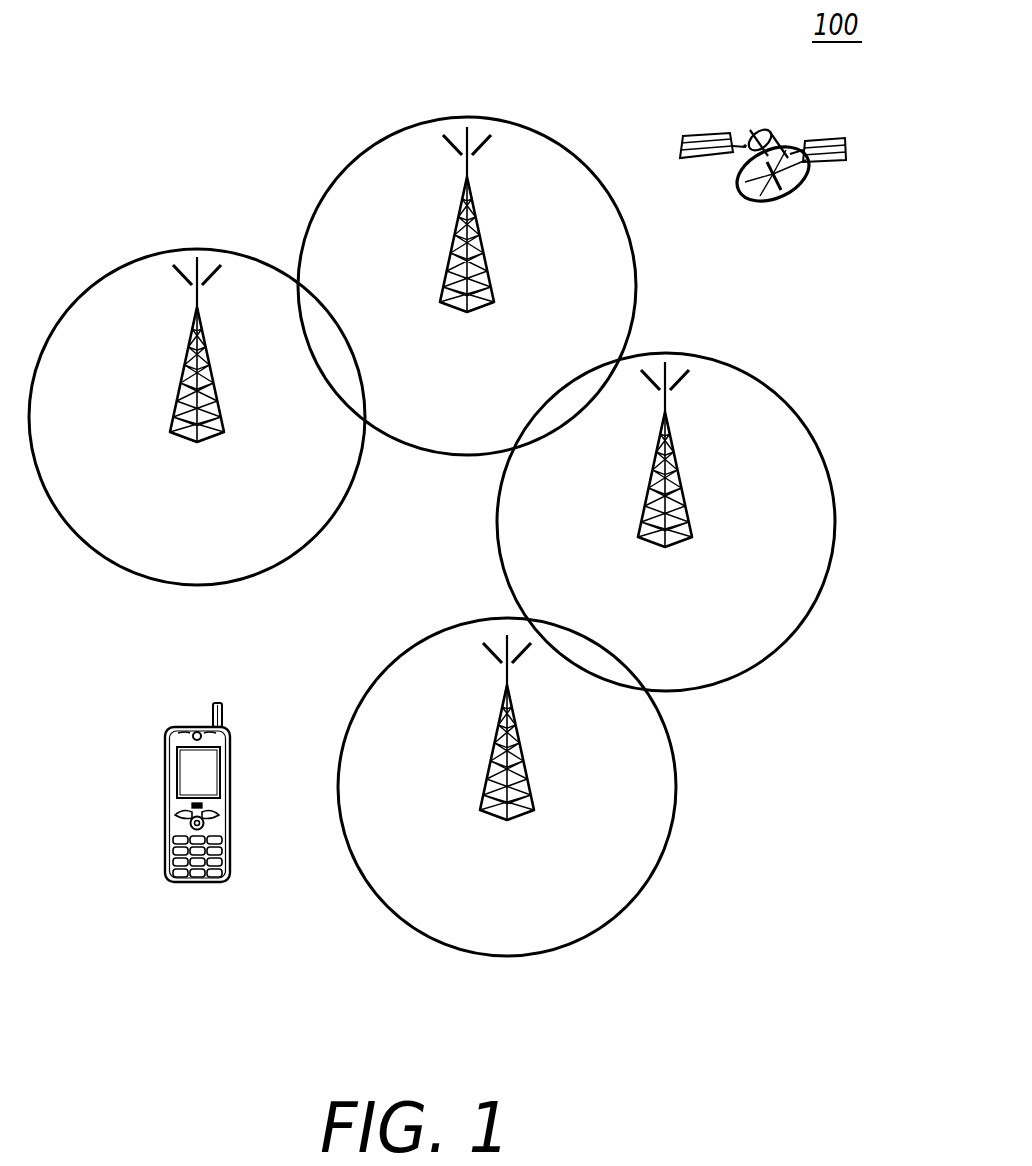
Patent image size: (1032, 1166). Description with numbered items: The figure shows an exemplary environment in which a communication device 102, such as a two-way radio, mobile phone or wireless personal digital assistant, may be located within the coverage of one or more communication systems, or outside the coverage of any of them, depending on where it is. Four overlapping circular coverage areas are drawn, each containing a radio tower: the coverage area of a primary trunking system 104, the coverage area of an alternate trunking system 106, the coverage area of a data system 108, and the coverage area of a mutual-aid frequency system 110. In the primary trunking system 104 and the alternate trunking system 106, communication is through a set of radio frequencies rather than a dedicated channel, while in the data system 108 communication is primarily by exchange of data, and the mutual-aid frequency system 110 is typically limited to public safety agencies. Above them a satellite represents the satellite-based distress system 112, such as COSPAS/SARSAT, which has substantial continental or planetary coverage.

The communication device 102 is at (200, 885).
The primary trunking system 104 is at (522, 753).
The alternate trunking system 106 is at (681, 478).
The data system 108 is at (482, 243).
The mutual-aid frequency system 110 is at (212, 373).
The satellite-based distress system 112 is at (826, 137).